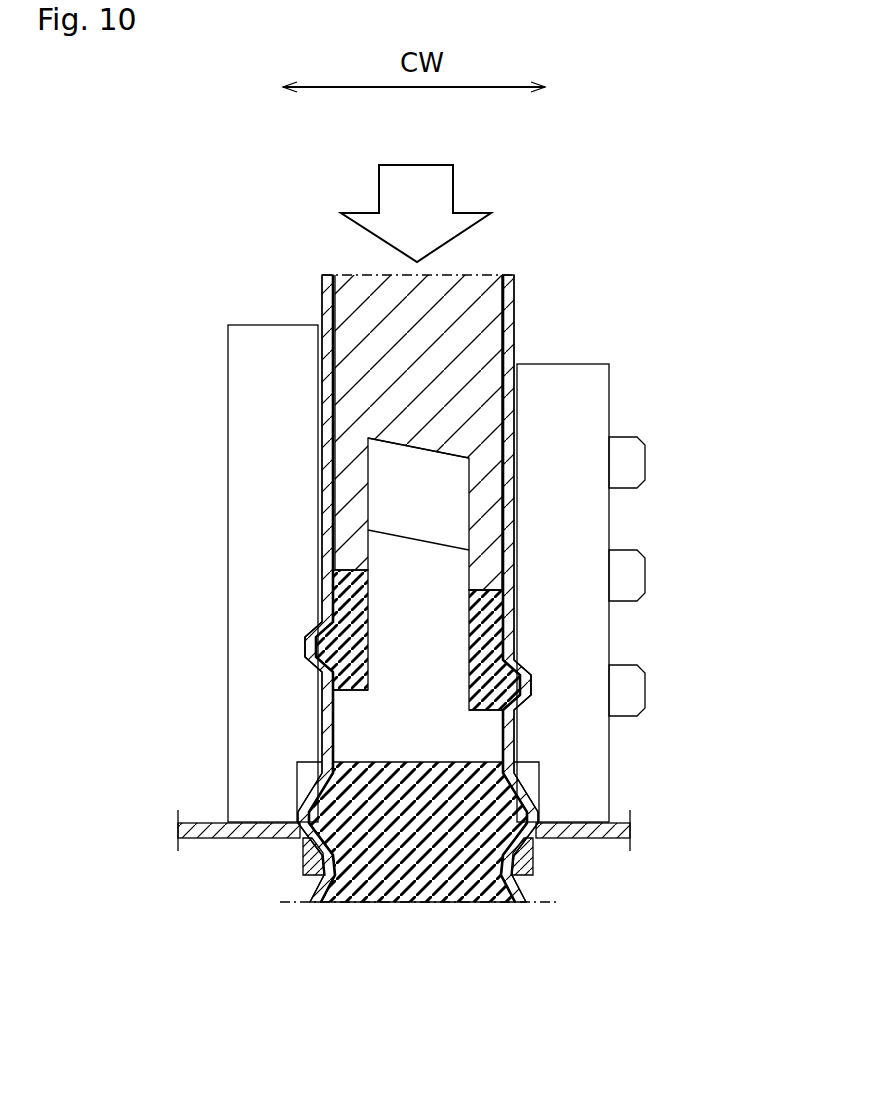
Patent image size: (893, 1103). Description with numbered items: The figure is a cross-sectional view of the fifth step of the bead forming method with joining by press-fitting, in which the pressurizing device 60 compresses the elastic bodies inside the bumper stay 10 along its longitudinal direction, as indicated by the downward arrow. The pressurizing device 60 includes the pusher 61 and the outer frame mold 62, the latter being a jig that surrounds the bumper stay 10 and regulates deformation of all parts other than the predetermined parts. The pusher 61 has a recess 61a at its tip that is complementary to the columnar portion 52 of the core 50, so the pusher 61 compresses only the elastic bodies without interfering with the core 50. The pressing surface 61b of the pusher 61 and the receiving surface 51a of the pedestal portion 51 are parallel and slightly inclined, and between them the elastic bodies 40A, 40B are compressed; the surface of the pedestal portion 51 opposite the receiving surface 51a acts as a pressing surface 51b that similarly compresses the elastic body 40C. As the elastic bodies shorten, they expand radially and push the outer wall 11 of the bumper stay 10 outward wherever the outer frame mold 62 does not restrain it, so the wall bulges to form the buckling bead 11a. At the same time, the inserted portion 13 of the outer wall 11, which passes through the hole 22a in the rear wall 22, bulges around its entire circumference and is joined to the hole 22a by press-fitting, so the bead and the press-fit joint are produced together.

The bumper stay 10 is at (513, 296).
The outer wall 11 is at (515, 343).
The buckling bead 11a is at (307, 628).
The inserted portion 13 is at (297, 813).
The rear wall 22 is at (237, 840).
The hole 22a is at (517, 858).
The elastic body 40A is at (350, 600).
The elastic body 40B is at (497, 618).
The elastic body 40C is at (472, 900).
The core 50 is at (345, 705).
The pedestal portion 51 is at (350, 735).
The receiving surface 51a is at (303, 652).
The pressing surface 51b is at (523, 800).
The columnar portion 52 is at (385, 563).
The pressurizing device 60 is at (176, 365).
The pusher 61 is at (465, 300).
The recess 61a is at (400, 476).
The pressing surface 61b is at (505, 605).
The outer frame mold 62 is at (228, 457).